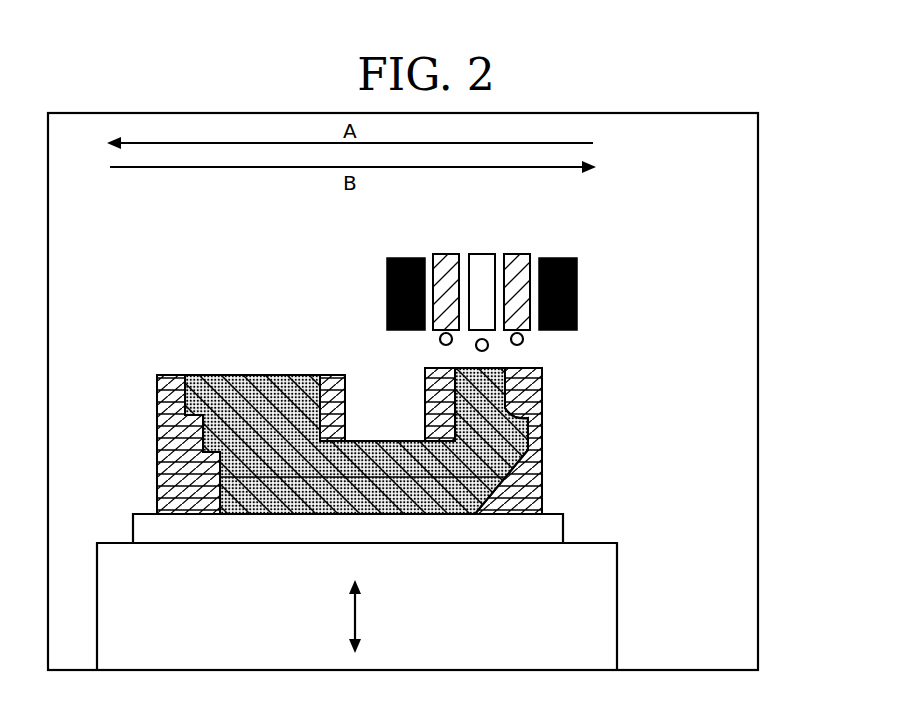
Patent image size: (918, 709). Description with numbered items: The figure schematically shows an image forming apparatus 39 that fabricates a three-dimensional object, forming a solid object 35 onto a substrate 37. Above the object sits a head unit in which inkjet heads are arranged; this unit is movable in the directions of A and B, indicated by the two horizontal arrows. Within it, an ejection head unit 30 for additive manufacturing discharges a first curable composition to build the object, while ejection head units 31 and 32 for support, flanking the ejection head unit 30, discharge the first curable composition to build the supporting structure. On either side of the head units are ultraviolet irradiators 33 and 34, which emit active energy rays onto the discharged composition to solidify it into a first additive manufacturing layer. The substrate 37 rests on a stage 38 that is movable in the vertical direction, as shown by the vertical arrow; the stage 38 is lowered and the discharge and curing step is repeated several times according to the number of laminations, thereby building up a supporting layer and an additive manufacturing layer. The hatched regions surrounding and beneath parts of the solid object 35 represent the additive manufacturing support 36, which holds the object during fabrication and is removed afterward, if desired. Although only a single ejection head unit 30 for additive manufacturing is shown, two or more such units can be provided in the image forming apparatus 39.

The ejection head unit for additive manufacturing 30 is at (486, 254).
The ejection head unit for support 31 is at (447, 254).
The ejection head unit for support 32 is at (522, 254).
The ultraviolet irradiator 33 is at (387, 270).
The ultraviolet irradiator 34 is at (577, 270).
The solid object 35 is at (253, 375).
The additive manufacturing support 36 is at (542, 400).
The substrate 37 is at (563, 526).
The stage 38 is at (617, 556).
The image forming apparatus 39 is at (758, 134).